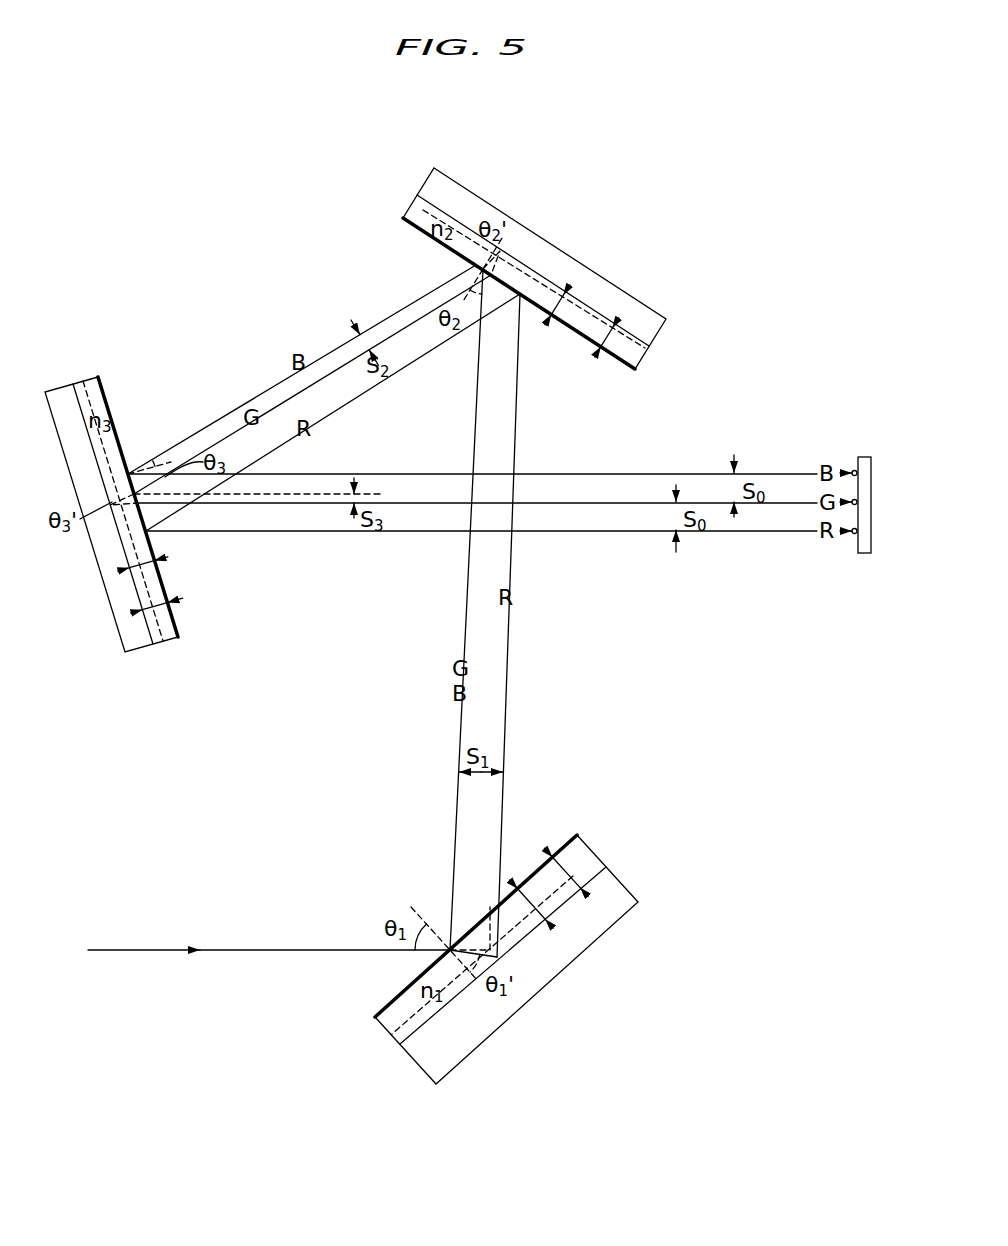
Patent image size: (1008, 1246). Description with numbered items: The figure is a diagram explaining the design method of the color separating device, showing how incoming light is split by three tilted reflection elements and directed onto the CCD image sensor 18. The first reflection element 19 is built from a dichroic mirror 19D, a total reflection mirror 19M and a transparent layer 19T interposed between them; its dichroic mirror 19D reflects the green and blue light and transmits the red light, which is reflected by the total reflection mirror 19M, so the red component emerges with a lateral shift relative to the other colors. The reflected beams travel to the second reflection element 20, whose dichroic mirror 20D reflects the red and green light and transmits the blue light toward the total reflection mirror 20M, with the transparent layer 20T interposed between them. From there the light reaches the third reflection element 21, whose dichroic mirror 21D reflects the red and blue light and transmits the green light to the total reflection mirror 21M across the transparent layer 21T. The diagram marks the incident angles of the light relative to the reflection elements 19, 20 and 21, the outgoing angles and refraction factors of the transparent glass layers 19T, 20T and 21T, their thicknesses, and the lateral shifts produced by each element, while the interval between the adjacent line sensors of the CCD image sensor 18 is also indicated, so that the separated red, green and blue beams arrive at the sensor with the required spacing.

The CCD image sensor 18 is at (866, 527).
The reflection element 19 is at (507, 925).
The dichroic mirror 19D is at (577, 835).
The total reflection mirror 19M is at (598, 875).
The transparent layer 19T is at (390, 1033).
The reflection element 20 is at (542, 282).
The dichroic mirror 20D is at (632, 371).
The total reflection mirror 20M is at (640, 329).
The transparent layer 20T is at (413, 202).
The reflection element 21 is at (129, 514).
The dichroic mirror 21D is at (176, 624).
The total reflection mirror 21M is at (143, 624).
The transparent layer 21T is at (99, 377).